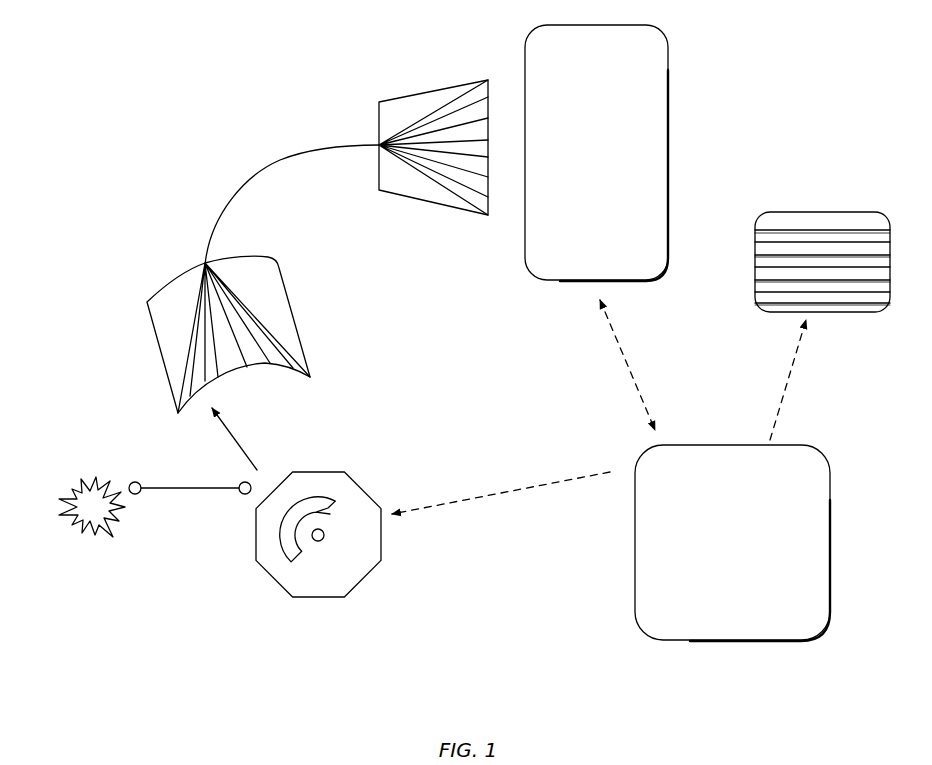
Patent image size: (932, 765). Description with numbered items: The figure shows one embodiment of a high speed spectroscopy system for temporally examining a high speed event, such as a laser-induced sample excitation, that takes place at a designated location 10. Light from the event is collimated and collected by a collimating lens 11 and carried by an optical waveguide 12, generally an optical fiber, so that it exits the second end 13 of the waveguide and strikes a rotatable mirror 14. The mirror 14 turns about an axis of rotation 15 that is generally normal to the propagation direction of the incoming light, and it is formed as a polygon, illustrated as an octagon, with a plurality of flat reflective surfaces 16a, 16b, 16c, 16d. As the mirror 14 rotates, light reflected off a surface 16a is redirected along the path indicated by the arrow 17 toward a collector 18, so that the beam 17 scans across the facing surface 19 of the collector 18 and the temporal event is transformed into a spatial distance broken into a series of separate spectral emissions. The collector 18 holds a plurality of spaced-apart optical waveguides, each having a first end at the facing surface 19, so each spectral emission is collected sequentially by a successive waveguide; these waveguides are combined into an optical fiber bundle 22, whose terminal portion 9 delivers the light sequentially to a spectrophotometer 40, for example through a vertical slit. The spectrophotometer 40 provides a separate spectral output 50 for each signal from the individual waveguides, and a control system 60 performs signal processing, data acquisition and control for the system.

The terminal portion of the collector 9 is at (412, 107).
The designated location 10 is at (82, 537).
The collimating lens 11 is at (135, 482).
The optical waveguide 12 is at (192, 490).
The second end of the waveguide 13 is at (240, 485).
The rotatable mirror 14 is at (302, 543).
The axis of rotation 15 is at (327, 540).
The reflective surface 16a is at (283, 478).
The reflective surface 16b is at (257, 517).
The reflective surface 16c is at (280, 587).
The reflective surface 16d is at (313, 598).
The arrow / reflected beam 17 is at (230, 424).
The collector 18 is at (160, 330).
The facing surface of the collector 19 is at (307, 382).
The optical fiber bundle 22 is at (252, 175).
The spectrophotometer 40 is at (596, 153).
The spectral output 50 is at (827, 217).
The control system 60 is at (732, 543).